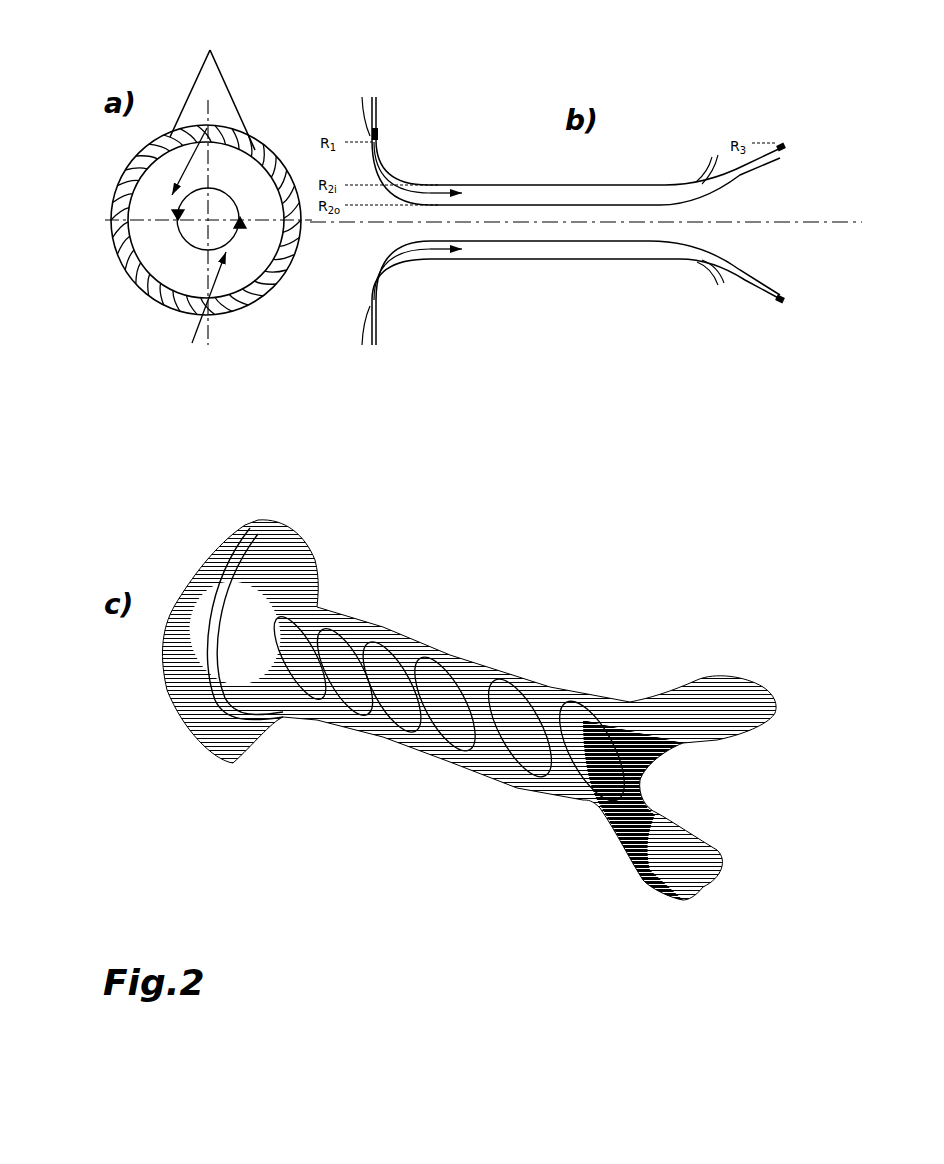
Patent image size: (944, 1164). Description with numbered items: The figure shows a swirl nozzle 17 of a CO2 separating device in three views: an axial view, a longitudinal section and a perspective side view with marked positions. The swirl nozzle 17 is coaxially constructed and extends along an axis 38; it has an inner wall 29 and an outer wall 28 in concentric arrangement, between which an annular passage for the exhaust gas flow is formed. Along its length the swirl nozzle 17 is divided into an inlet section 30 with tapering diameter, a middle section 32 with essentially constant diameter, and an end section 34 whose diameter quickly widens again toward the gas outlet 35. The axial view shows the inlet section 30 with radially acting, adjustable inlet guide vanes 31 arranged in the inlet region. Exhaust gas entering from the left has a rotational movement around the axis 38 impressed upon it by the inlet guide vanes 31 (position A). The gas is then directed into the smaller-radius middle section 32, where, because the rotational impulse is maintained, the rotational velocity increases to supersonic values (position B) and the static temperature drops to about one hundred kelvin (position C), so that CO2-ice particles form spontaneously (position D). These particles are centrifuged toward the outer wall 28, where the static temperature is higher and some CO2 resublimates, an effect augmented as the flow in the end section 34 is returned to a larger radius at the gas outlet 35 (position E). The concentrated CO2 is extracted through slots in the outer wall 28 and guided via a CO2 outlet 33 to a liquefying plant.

The swirl nozzle 17 is at (127, 304).
The outer wall 28 is at (495, 261).
The inner wall 29 is at (500, 204).
The inlet section 30 is at (366, 89).
The inlet guide vanes 31 is at (438, 60).
The middle section 32 is at (618, 268).
The CO2 outlet 33 is at (710, 164).
The end section 34 is at (747, 279).
The gas outlet 35 is at (780, 142).
The axis 38 is at (797, 221).
The position A is at (249, 530).
The position B is at (266, 678).
The position C is at (330, 645).
The position D is at (433, 660).
The position E is at (694, 682).